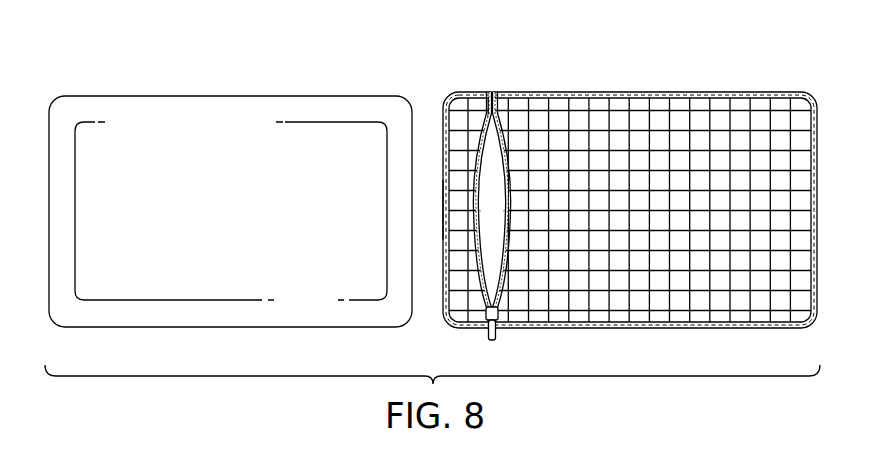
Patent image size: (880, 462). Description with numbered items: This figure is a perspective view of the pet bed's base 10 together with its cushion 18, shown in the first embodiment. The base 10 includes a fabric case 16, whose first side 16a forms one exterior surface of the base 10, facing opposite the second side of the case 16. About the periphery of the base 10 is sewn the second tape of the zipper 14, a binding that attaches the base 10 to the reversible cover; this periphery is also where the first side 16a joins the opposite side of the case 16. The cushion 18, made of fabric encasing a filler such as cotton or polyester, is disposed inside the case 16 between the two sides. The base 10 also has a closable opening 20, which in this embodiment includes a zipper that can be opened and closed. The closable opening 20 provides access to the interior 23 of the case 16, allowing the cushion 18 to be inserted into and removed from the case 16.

The base 10 is at (590, 46).
The zipper 14 is at (640, 97).
The case 16 is at (577, 92).
The first side 16a is at (443, 123).
The cushion 18 is at (240, 96).
The closable opening 20 is at (488, 110).
The interior 23 is at (492, 235).